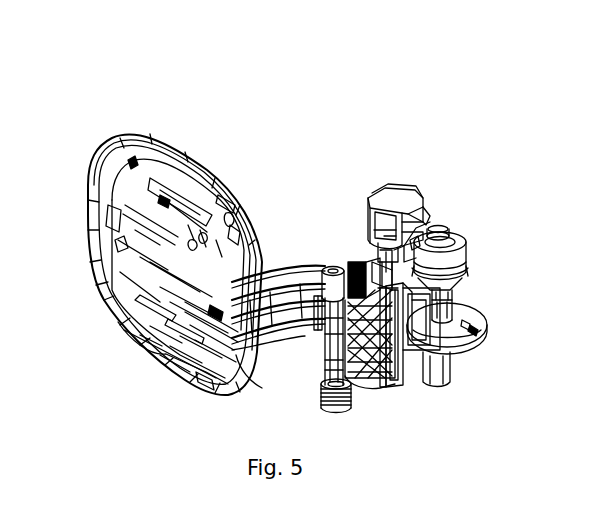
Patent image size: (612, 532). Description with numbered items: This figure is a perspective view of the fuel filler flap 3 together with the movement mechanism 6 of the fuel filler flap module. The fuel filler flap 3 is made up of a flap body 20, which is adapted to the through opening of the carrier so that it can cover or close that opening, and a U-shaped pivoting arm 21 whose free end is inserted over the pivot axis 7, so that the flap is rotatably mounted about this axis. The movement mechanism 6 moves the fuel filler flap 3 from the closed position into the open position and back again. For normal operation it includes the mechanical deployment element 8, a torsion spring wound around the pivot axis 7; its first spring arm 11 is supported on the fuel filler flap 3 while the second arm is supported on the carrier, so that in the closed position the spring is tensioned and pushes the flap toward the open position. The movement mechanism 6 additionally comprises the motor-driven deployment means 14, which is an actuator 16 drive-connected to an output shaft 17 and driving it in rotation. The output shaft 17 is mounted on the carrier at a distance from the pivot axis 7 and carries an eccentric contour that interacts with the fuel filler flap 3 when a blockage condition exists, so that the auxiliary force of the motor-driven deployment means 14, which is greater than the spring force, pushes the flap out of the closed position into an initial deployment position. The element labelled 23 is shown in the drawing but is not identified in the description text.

The fuel filler flap 3 is at (178, 138).
The flap body 20 is at (138, 338).
The pivoting arm 21 is at (289, 262).
The pivot axis 7 is at (333, 266).
The motor-driven deployment means 14 is at (382, 186).
The actuator 16 is at (432, 229).
The movement mechanism 6 is at (484, 289).
The output shaft 17 is at (478, 294).
The plate 23 is at (457, 347).
The first spring arm 11 is at (352, 378).
The mechanical deployment element 8 is at (358, 402).